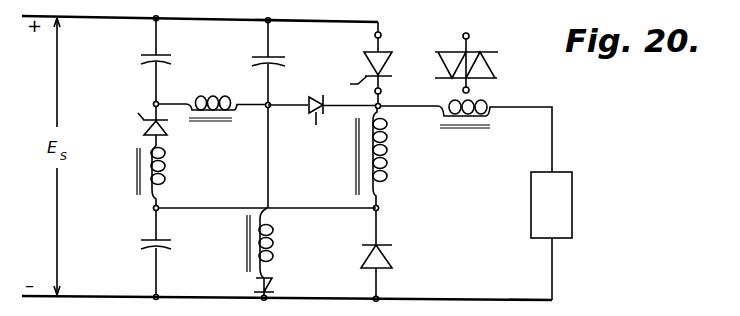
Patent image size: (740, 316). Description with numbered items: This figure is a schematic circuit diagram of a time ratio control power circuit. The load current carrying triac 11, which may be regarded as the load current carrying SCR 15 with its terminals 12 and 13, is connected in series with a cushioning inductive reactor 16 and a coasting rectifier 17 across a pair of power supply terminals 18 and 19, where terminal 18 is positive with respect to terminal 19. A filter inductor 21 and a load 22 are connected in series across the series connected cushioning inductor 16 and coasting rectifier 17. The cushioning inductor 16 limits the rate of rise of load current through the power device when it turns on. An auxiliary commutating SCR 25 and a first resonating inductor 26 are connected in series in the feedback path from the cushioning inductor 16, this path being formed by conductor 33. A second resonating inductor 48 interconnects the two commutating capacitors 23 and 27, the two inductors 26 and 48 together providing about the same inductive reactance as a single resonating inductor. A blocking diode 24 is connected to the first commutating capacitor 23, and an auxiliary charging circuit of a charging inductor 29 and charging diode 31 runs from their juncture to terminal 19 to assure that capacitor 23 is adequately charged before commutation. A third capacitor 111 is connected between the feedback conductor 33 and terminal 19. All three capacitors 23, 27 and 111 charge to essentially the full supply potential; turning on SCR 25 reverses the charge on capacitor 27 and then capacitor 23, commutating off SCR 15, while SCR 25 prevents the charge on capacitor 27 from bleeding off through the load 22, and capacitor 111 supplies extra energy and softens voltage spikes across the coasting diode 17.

The load current carrying triac 11 is at (492, 66).
The terminal 12 is at (383, 36).
The terminal 13 is at (383, 92).
The load current carrying SCR 15 is at (388, 64).
The cushioning inductive reactor 16 is at (389, 168).
The coasting rectifier 17 is at (393, 260).
The power supply terminal 18 is at (105, 21).
The power supply terminal 19 is at (123, 295).
The filter inductor 21 is at (485, 102).
The load 22 is at (574, 208).
The first commutating capacitor 23 is at (257, 50).
The blocking diode 24 is at (322, 124).
The auxiliary commutating SCR 25 is at (142, 127).
The first resonating inductor 26 is at (167, 183).
The commutating capacitor 27 is at (144, 50).
The charging inductor 29 is at (276, 244).
The charging diode 31 is at (276, 282).
The conductor 33 is at (212, 208).
The second resonating inductor 48 is at (212, 99).
The third capacitor 111 is at (143, 238).